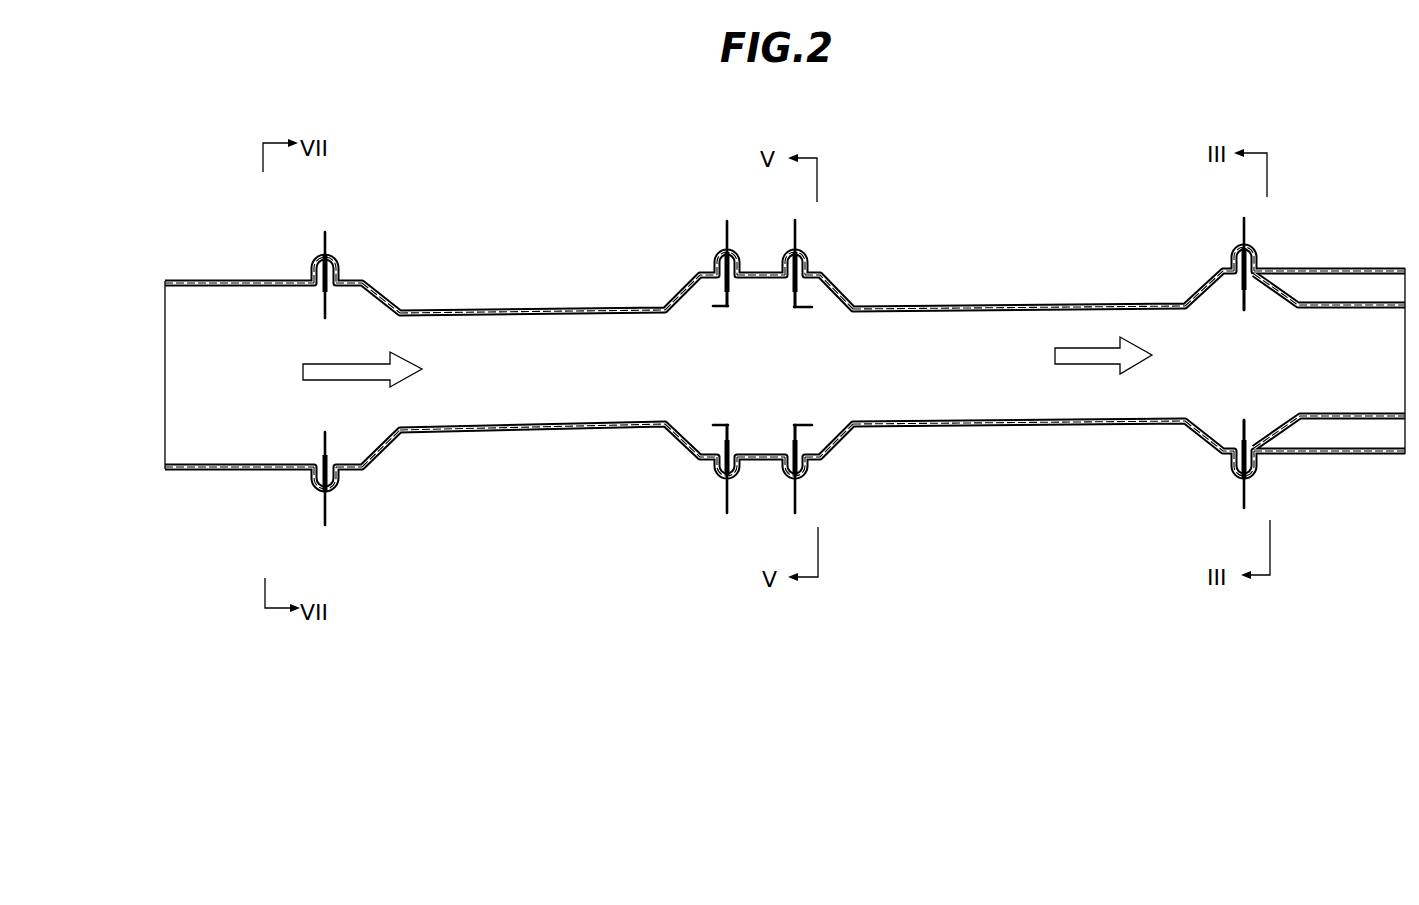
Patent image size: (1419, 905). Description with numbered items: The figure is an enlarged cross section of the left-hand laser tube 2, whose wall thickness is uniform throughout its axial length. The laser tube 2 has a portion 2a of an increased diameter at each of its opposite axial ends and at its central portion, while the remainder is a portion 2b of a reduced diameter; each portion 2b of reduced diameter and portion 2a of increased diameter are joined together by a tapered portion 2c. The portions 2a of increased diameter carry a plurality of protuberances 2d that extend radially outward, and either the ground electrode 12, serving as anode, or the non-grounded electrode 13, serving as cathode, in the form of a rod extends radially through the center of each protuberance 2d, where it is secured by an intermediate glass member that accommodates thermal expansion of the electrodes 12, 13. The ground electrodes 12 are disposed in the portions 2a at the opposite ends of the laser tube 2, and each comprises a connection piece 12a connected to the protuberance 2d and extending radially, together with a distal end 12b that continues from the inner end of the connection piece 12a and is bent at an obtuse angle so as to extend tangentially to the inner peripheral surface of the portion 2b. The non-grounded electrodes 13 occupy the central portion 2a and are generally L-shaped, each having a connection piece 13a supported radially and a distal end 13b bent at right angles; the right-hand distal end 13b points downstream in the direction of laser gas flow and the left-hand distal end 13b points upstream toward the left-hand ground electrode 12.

The laser tube 2 is at (958, 271).
The portion of an increased diameter 2a is at (202, 280).
The portion of a reduced diameter 2b is at (530, 309).
The tapered portion 2c is at (380, 290).
The protuberance 2d is at (312, 263).
The ground electrode 12 is at (328, 240).
The connection piece 12a is at (1262, 290).
The distal end 12b is at (1244, 311).
The non-grounded electrode 13 is at (726, 228).
The connection piece 13a is at (733, 293).
The distal end 13b is at (717, 422).